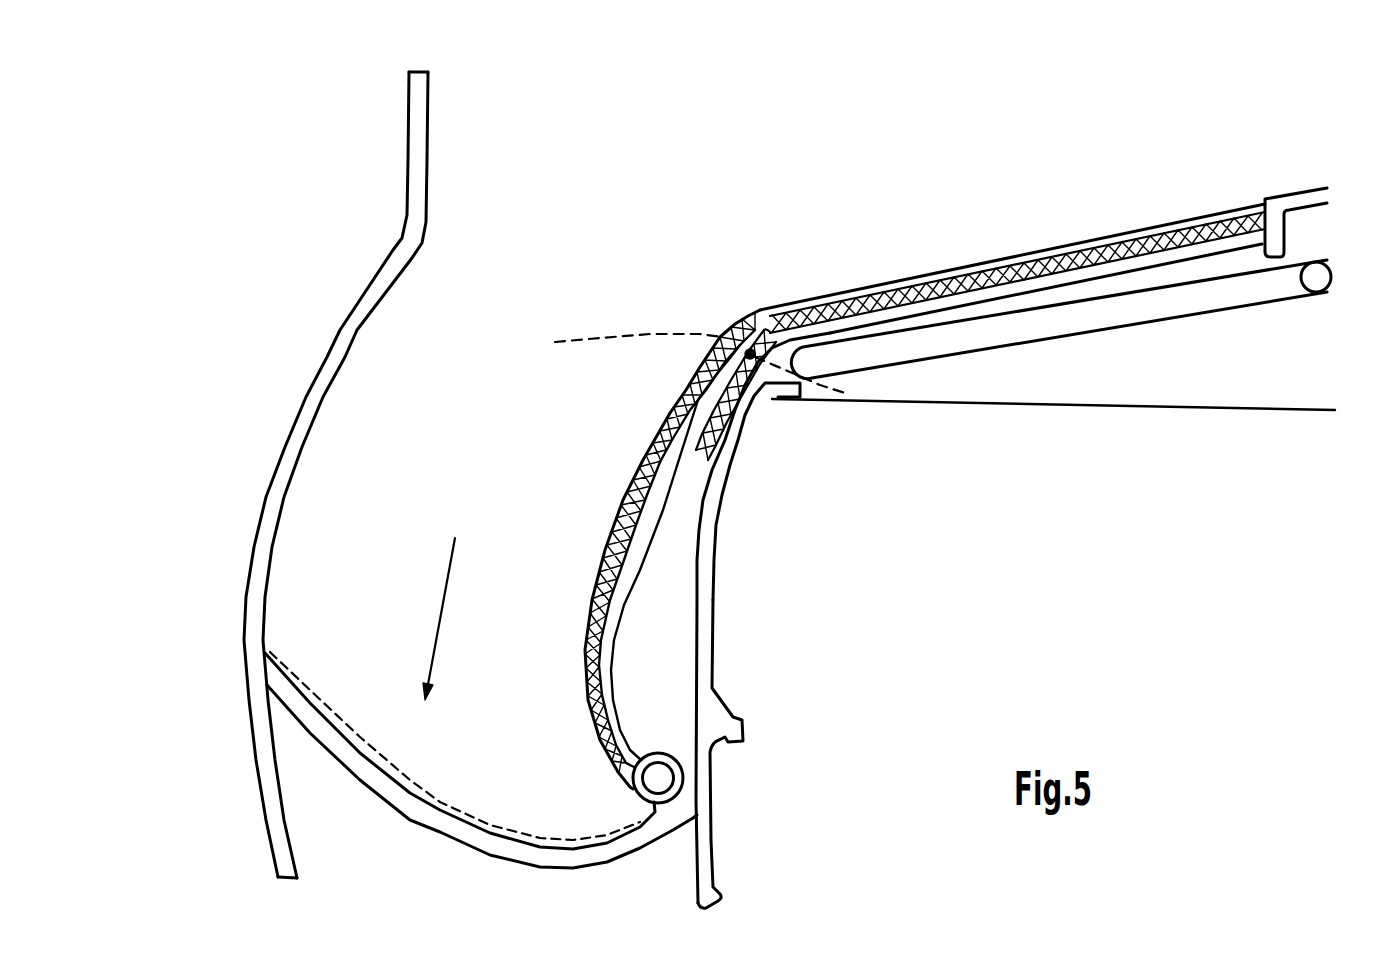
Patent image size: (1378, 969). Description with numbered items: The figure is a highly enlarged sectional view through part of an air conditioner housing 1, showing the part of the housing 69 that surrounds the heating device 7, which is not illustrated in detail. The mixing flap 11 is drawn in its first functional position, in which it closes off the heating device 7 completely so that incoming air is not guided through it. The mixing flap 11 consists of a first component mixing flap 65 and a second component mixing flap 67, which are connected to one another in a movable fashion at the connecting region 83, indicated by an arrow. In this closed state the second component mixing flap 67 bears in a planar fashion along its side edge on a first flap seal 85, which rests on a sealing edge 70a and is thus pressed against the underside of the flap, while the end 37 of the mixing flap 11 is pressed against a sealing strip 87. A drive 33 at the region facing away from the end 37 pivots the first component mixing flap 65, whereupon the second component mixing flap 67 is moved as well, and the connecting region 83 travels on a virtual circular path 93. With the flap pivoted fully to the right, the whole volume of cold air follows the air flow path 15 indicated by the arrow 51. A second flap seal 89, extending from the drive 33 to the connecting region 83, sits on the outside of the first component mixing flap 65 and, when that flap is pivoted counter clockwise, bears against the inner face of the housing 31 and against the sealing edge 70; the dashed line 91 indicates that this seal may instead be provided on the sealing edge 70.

The air conditioner housing 1 is at (612, 130).
The heating device 7 is at (987, 541).
The mixing flap 11 is at (775, 290).
The air flow path 15 is at (366, 458).
The housing 31 is at (353, 325).
The drive 33 is at (660, 778).
The end 37 is at (1256, 212).
The arrow 51 is at (442, 620).
The first component mixing flap 65 is at (622, 597).
The second component mixing flap 67 is at (982, 270).
The housing 69 is at (712, 528).
The sealing edge 70 is at (363, 768).
The sealing edge 70a is at (906, 305).
The connecting region 83 is at (750, 353).
The first flap seal 85 is at (862, 303).
The sealing strip 87 is at (1259, 212).
The second flap seal 89 is at (600, 672).
The dashed line 91 is at (267, 653).
The virtual circular path 93 is at (600, 337).